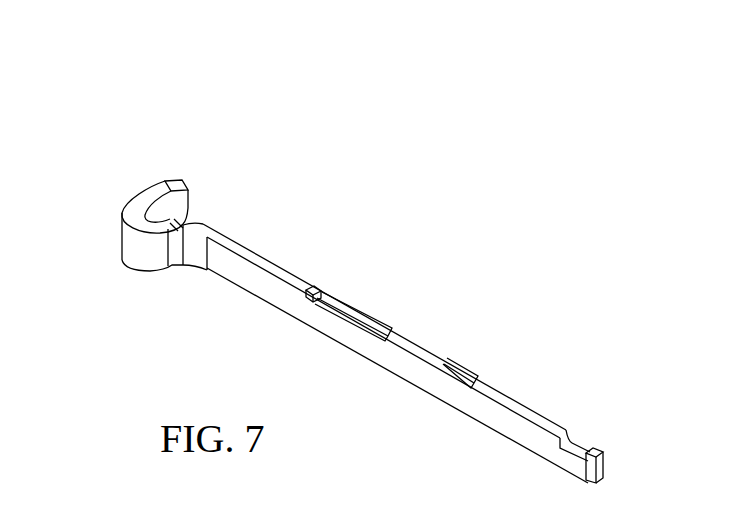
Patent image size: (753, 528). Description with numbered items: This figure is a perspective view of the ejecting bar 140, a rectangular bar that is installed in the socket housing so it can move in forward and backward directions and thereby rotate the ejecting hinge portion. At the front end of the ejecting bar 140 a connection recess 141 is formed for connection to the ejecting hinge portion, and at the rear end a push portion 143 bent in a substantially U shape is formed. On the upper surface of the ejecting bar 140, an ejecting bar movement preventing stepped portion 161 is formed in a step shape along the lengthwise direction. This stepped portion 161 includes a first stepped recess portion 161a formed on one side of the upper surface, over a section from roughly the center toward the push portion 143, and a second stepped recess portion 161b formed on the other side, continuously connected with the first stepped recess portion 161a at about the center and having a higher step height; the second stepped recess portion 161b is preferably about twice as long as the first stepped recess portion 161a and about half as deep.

The ejecting bar 140 is at (375, 68).
The connection recess 141 is at (579, 447).
The push portion 143 is at (146, 188).
The ejecting bar movement preventing stepped portion 161 is at (413, 235).
The first stepped recess portion 161a is at (333, 301).
The second stepped recess portion 161b is at (373, 322).